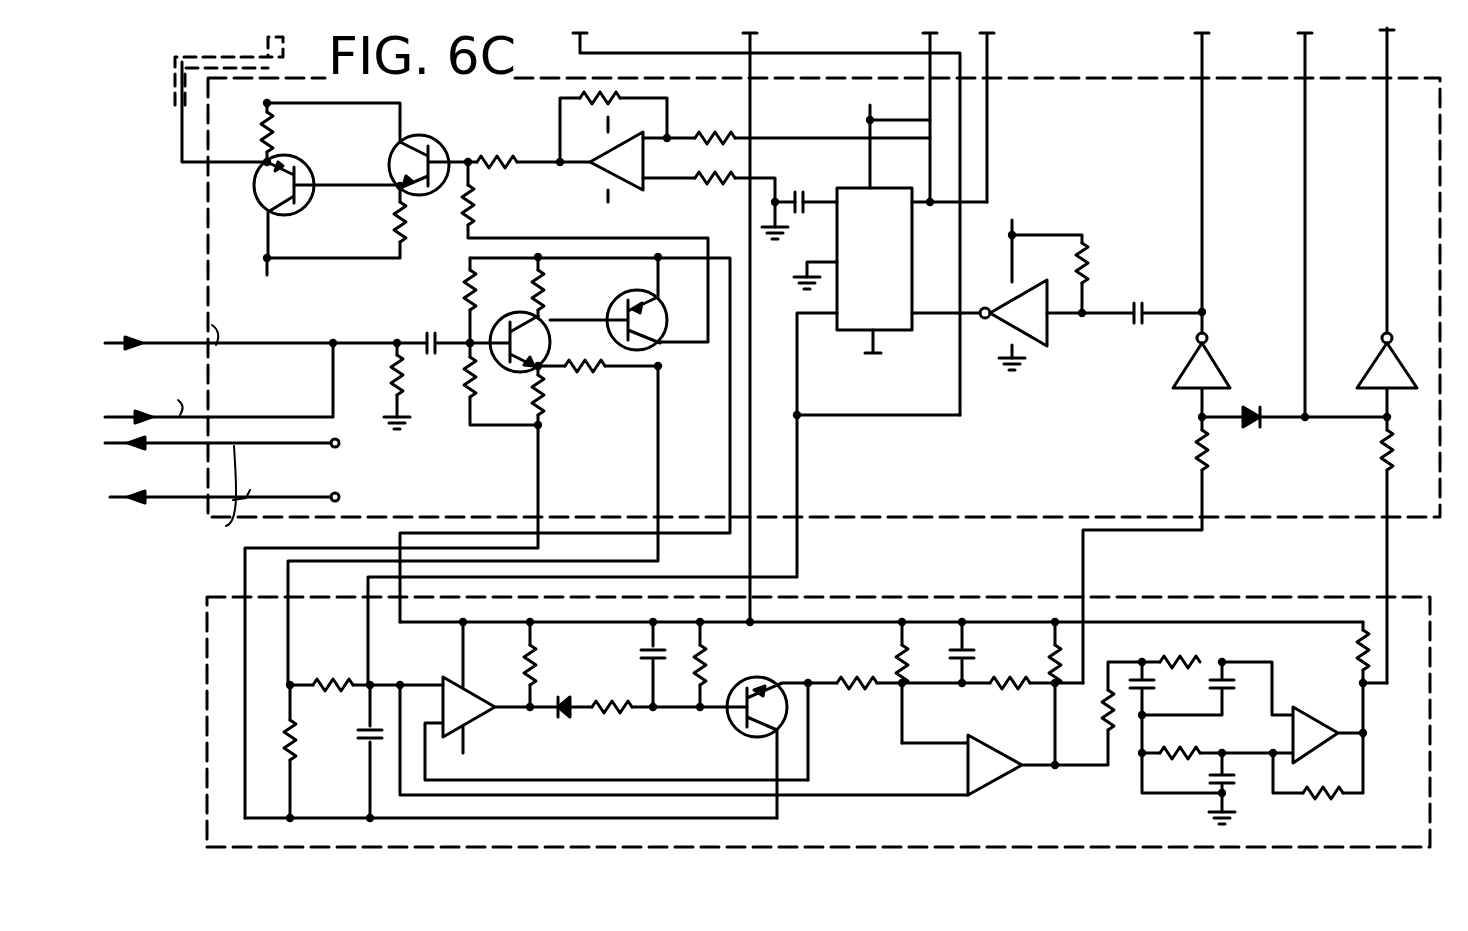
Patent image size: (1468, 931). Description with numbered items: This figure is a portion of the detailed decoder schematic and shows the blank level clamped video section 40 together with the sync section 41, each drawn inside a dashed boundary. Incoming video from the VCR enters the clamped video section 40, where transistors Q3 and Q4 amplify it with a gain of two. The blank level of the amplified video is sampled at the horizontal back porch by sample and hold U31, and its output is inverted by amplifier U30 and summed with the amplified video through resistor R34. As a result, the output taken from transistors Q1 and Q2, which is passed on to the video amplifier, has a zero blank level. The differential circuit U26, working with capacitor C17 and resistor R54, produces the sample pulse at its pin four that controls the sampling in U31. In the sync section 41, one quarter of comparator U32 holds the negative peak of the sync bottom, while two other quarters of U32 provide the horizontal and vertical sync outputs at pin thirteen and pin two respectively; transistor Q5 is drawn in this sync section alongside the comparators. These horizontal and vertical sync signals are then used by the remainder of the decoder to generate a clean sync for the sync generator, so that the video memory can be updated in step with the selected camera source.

The blank level clamped video 40 is at (772, 427).
The sync 41 is at (818, 743).
The transistor Q1 is at (410, 135).
The transistor Q2 is at (288, 160).
The transistor Q3 is at (626, 300).
The transistor Q4 is at (522, 312).
The transistor Q5 is at (746, 680).
The resistor R34 is at (514, 147).
The resistor R54 is at (1109, 264).
The capacitor C17 is at (1143, 328).
The operational amplifier U30 is at (618, 192).
The sample and hold U31 is at (890, 246).
The differential circuit U26 is at (1191, 438).
The comparator U32 is at (470, 714).